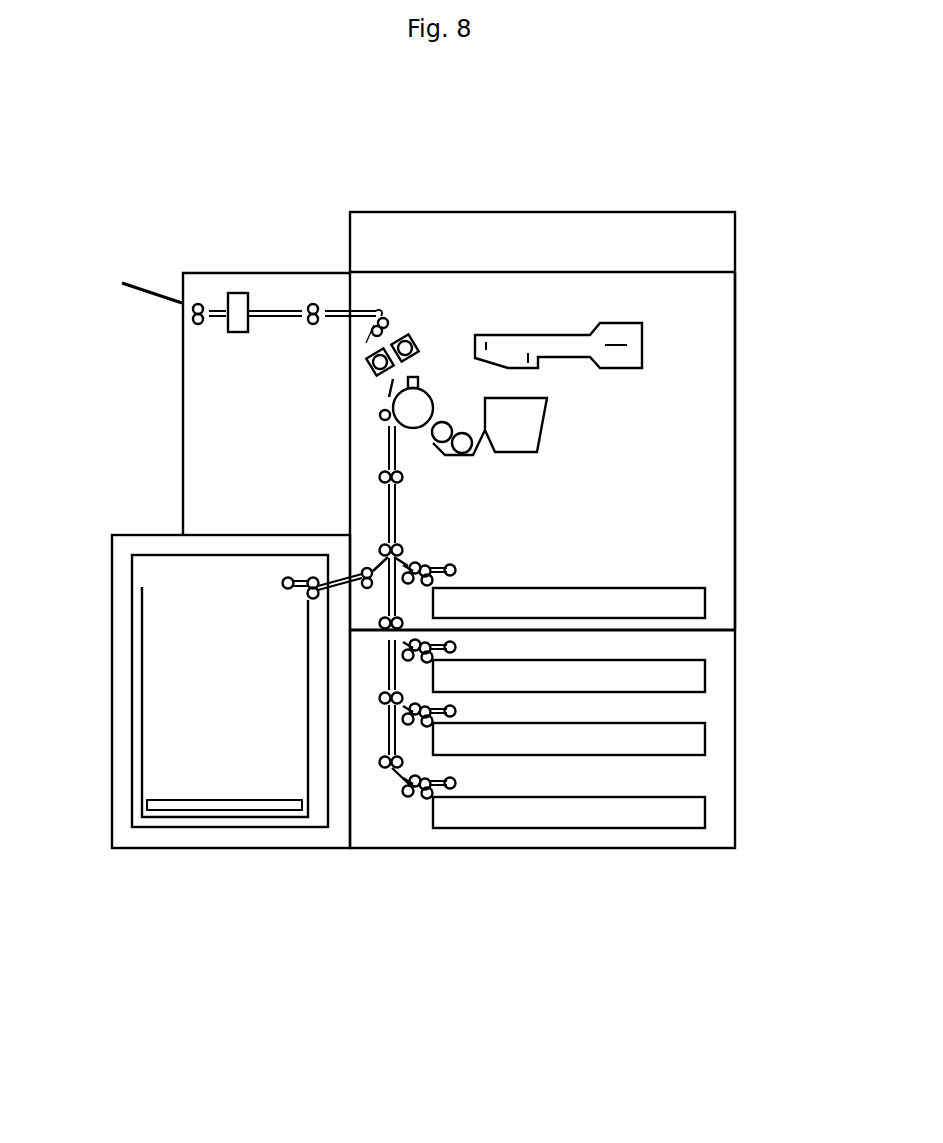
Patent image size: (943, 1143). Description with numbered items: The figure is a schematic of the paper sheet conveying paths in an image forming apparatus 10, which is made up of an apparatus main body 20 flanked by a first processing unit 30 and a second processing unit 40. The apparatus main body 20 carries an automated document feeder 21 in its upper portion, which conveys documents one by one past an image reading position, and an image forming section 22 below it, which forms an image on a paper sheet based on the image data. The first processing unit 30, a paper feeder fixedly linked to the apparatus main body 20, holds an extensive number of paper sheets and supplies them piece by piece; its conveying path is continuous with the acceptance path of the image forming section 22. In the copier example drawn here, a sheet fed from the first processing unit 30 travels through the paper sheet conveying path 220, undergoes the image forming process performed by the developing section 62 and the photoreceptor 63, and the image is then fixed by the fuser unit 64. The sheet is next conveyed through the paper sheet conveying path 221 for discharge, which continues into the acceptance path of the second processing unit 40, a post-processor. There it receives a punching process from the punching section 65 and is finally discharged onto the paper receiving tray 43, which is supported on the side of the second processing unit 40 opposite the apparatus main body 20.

The image forming apparatus 10 is at (148, 133).
The apparatus main body 20 is at (727, 173).
The automated document feeder 21 is at (662, 200).
The image forming section 22 is at (754, 335).
The paper sheet conveying path 220 is at (411, 500).
The paper sheet conveying path for discharge 221 is at (382, 317).
The first processing unit 30 is at (253, 878).
The second processing unit 40 is at (188, 415).
The paper receiving tray 43 is at (132, 288).
The developing section 62 is at (558, 413).
The photoreceptor 63 is at (443, 405).
The fuser unit 64 is at (432, 342).
The punching section 65 is at (233, 257).